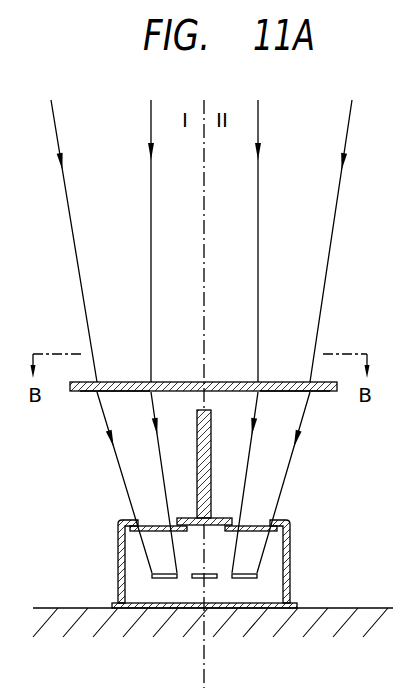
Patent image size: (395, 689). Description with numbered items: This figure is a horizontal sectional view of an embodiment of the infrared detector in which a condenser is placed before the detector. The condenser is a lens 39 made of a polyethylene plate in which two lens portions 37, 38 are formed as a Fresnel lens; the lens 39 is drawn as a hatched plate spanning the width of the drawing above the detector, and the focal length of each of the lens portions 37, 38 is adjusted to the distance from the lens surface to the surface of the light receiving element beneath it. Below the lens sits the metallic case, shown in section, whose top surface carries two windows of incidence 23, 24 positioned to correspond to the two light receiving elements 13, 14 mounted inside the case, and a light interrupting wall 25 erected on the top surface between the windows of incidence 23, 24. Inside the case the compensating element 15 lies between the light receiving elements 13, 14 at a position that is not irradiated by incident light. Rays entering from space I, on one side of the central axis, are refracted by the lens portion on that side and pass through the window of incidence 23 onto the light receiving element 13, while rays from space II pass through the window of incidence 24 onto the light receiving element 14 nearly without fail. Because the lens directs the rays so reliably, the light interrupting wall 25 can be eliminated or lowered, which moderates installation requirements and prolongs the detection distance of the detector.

The light receiving element 13 is at (152, 579).
The light receiving element 14 is at (250, 579).
The compensating element 15 is at (210, 579).
The window of incidence 23 is at (132, 531).
The window of incidence 24 is at (273, 531).
The light interrupting wall 25 is at (211, 441).
The lens portion 37 is at (118, 393).
The lens portion 38 is at (293, 393).
The lens 39 is at (73, 393).